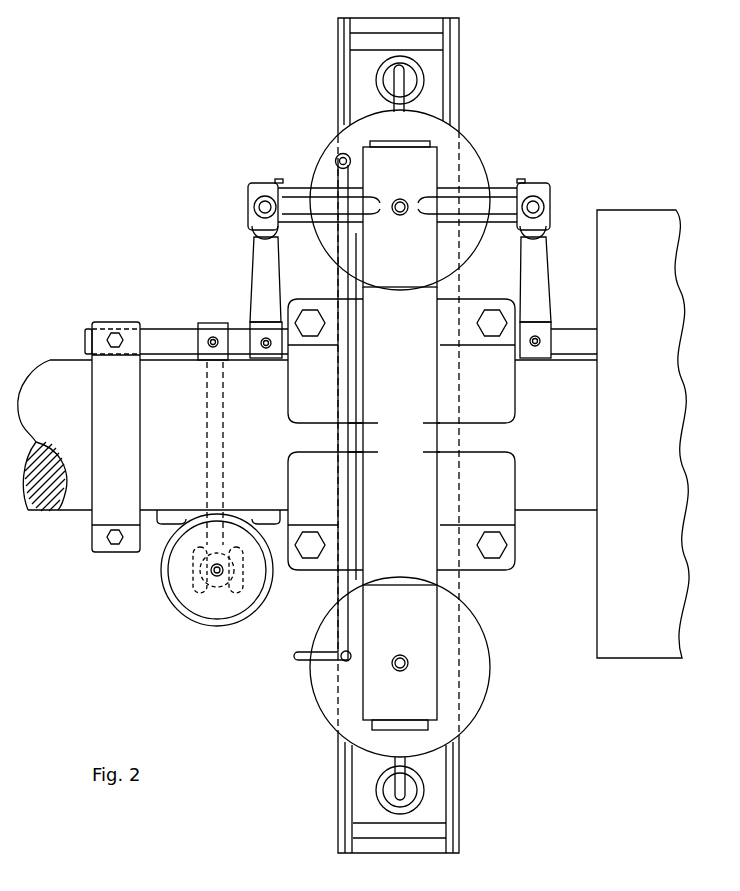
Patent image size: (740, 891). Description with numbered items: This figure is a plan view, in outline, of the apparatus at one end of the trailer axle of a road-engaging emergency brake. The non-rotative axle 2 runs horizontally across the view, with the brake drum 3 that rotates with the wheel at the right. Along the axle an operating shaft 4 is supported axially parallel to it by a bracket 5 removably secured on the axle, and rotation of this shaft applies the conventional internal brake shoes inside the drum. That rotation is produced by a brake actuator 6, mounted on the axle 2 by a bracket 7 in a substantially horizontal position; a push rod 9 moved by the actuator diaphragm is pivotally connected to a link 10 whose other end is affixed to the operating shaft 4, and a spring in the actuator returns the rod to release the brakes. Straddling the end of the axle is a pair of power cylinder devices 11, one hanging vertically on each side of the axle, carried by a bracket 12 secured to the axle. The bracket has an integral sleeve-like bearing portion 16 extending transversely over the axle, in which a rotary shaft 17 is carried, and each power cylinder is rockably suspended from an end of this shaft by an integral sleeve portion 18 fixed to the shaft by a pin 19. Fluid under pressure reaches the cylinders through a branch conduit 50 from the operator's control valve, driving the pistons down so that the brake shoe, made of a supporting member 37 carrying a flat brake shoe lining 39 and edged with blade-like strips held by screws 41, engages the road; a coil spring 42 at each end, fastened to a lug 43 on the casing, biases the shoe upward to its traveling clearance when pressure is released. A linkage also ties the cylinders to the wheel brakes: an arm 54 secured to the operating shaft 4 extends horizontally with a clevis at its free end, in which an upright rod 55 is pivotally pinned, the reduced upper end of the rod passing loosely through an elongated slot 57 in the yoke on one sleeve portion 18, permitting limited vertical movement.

The axle 2 is at (50, 362).
The brake drum 3 is at (640, 656).
The operating shaft 4 is at (165, 329).
The bracket 5 is at (97, 420).
The brake actuator 6 is at (195, 601).
The bracket 7 is at (170, 524).
The push rod 9 is at (225, 590).
The link 10 is at (211, 444).
The power cylinder device 11 is at (491, 138).
The bracket 12 is at (510, 516).
The sleeve-like bearing portion 16 is at (428, 484).
The rotary shaft 17 is at (415, 730).
The sleeve portion 18 is at (428, 168).
The pin 19 is at (400, 215).
The supporting member 37 is at (442, 807).
The brake shoe lining 39 is at (391, 848).
The screw 41 is at (336, 76).
The coil spring 42 is at (412, 78).
The lug 43 is at (393, 98).
The branch conduit 50 is at (301, 663).
The arm 54 is at (252, 262).
The upright rod 55 is at (252, 209).
The elongated slot 57 is at (265, 199).